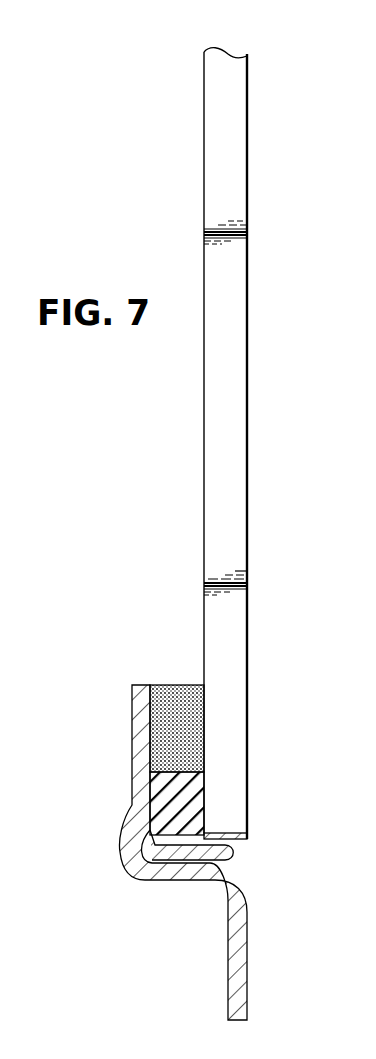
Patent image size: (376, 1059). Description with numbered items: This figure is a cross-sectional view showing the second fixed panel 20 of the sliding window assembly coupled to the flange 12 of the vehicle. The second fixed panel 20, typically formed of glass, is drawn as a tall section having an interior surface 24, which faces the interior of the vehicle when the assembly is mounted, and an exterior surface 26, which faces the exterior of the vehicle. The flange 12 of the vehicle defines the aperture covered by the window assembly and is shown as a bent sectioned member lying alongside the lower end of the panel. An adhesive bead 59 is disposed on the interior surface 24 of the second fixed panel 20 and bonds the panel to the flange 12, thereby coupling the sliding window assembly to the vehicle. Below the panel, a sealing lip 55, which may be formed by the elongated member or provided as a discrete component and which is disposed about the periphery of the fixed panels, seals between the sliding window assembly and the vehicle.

The second fixed panel 20 is at (231, 125).
The exterior surface 26 is at (251, 267).
The interior surface 24 is at (201, 657).
The adhesive bead 59 is at (173, 700).
The flange 12 is at (138, 775).
The sealing lip 55 is at (223, 844).